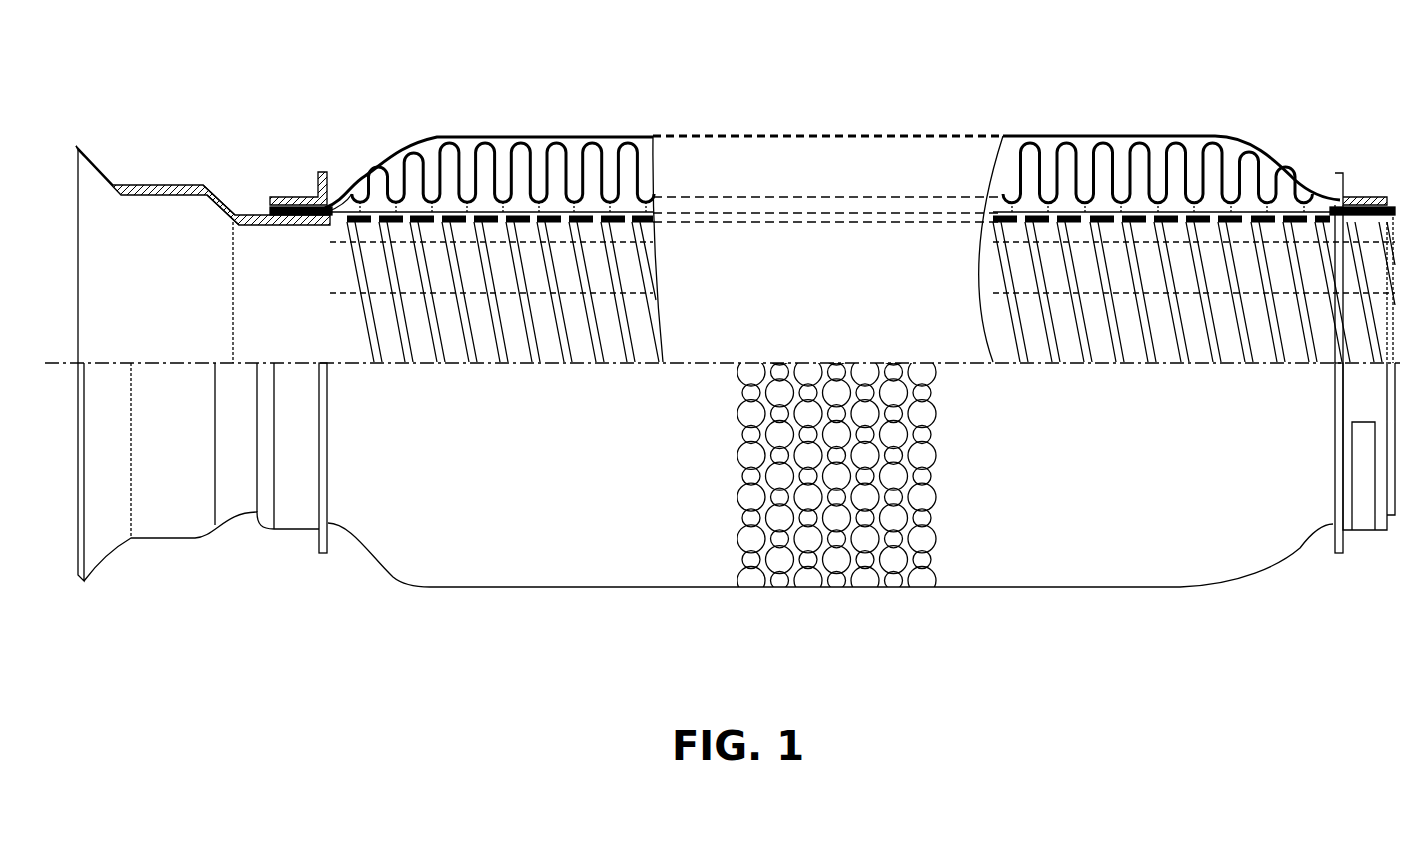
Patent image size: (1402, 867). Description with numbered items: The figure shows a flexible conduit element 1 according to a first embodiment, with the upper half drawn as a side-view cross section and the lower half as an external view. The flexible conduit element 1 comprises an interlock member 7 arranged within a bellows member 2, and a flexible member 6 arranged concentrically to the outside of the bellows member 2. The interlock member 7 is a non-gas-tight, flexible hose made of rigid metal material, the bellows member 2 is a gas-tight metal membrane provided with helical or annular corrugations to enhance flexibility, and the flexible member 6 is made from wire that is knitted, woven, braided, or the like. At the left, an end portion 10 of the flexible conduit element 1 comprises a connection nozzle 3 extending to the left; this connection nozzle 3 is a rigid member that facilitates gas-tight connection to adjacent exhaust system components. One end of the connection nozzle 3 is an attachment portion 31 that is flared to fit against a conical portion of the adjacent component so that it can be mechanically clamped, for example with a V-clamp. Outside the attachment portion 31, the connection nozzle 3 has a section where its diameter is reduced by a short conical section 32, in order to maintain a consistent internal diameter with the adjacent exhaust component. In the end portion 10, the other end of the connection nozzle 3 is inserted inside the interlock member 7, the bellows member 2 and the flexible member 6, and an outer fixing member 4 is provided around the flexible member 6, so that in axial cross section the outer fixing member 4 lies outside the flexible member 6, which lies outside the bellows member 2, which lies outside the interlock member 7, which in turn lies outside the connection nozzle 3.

The flexible conduit element 1 is at (818, 92).
The bellows member 2 is at (652, 180).
The connection nozzle 3 is at (163, 184).
The outer fixing member 4 is at (290, 196).
The flexible member 6 is at (543, 135).
The interlock member 7 is at (645, 222).
The end portion 10 is at (277, 157).
The attachment portion 31 is at (92, 188).
The short conical section 32 is at (215, 212).